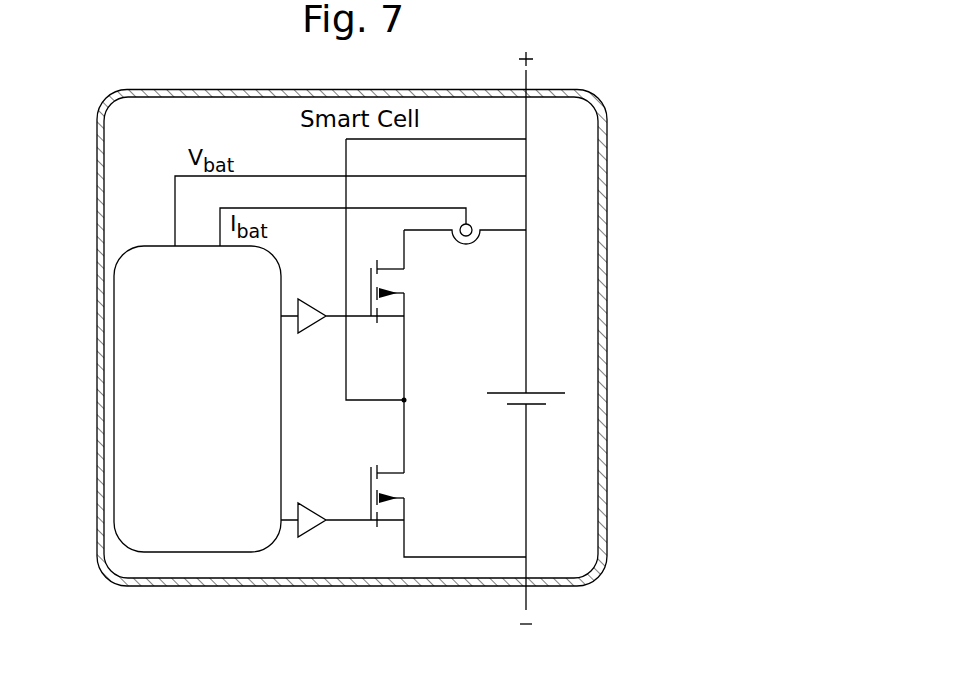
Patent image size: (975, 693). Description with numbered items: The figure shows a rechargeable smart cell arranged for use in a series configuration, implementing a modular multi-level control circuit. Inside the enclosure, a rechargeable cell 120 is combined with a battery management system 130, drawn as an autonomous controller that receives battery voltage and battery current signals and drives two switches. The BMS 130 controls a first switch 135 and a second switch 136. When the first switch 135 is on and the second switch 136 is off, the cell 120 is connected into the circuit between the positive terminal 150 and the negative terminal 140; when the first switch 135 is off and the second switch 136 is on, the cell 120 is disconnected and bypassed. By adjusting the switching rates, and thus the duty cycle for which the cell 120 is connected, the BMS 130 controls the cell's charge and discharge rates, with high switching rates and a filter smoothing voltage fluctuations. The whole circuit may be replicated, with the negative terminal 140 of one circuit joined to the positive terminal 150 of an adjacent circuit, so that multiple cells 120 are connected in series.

The battery management system (BMS) 130 is at (143, 322).
The first switch 135 is at (434, 299).
The second switch 136 is at (434, 500).
The rechargeable cell 120 is at (557, 395).
The positive terminal 150 is at (565, 52).
The negative terminal 140 is at (570, 623).